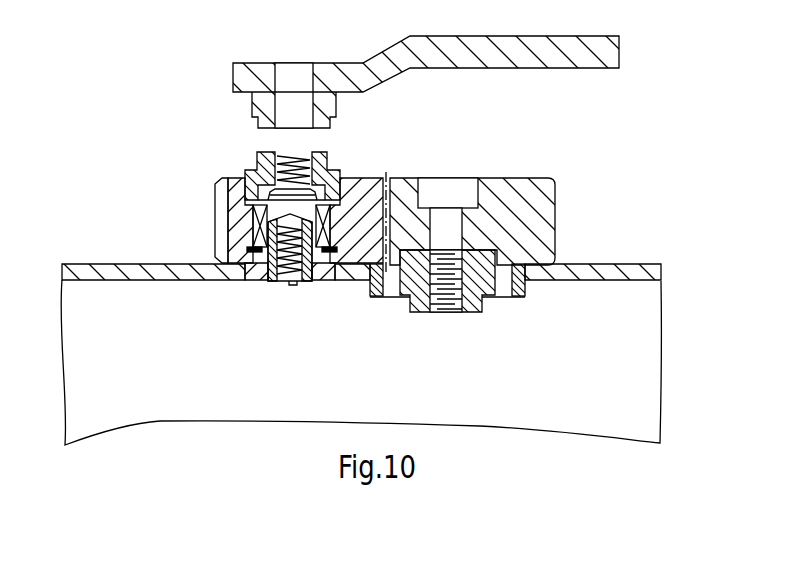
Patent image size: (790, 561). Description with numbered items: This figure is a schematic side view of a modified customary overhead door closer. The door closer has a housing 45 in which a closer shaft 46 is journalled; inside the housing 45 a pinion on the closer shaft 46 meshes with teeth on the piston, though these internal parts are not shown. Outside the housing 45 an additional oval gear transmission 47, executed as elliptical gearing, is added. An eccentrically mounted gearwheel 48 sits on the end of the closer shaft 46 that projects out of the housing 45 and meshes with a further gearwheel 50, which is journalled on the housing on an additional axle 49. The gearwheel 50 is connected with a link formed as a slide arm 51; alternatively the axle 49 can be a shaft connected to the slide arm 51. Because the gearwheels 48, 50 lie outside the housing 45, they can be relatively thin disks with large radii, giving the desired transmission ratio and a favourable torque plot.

The housing 45 is at (640, 318).
The closer shaft 46 is at (477, 312).
The oval gear transmission 47 is at (207, 161).
The eccentrically mounted gearwheel 48 is at (531, 186).
The additional axle 49 is at (240, 214).
The further gearwheel 50 is at (373, 176).
The slide arm 51 is at (533, 48).